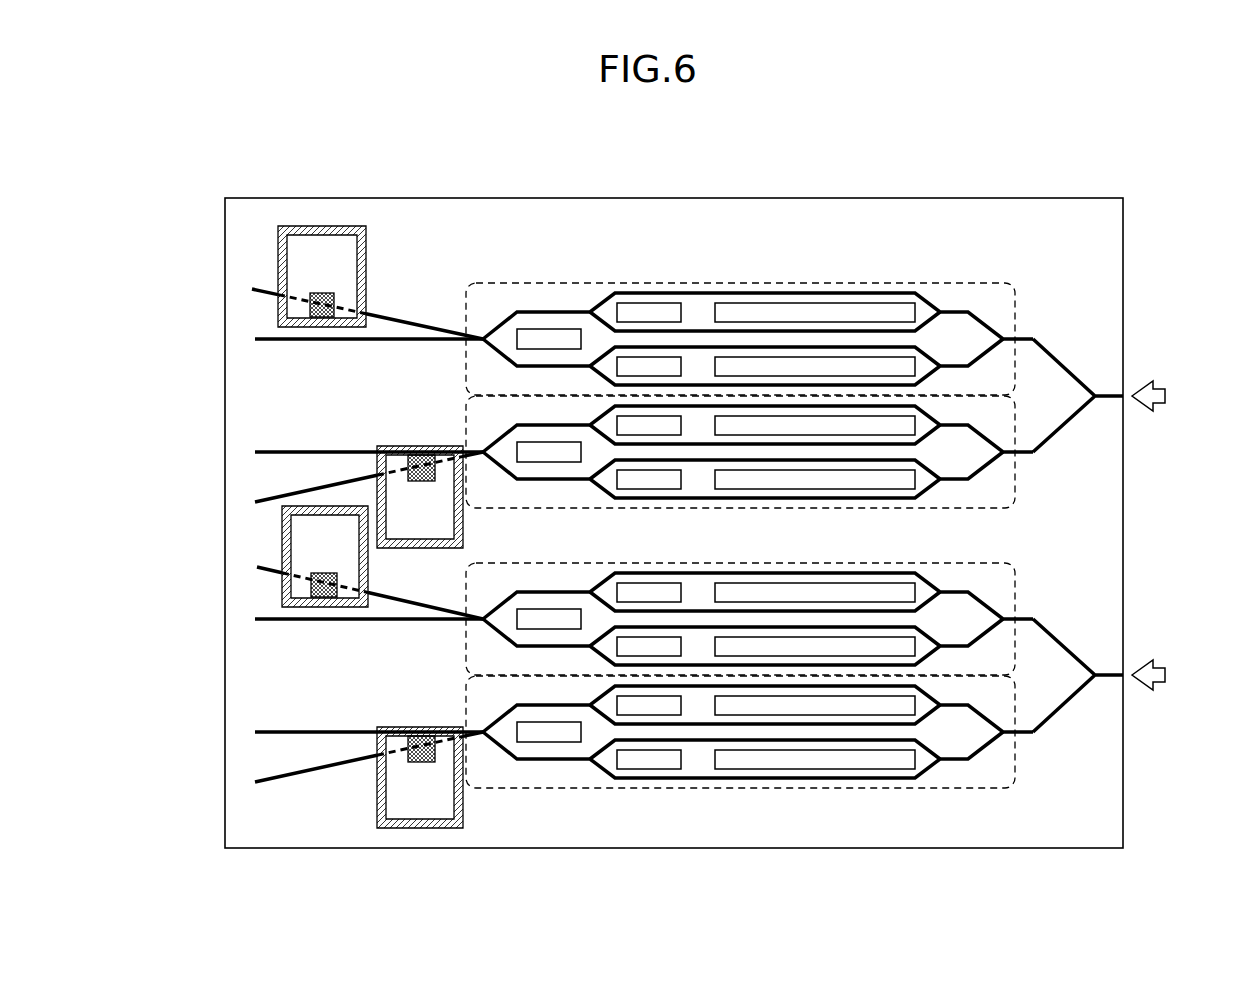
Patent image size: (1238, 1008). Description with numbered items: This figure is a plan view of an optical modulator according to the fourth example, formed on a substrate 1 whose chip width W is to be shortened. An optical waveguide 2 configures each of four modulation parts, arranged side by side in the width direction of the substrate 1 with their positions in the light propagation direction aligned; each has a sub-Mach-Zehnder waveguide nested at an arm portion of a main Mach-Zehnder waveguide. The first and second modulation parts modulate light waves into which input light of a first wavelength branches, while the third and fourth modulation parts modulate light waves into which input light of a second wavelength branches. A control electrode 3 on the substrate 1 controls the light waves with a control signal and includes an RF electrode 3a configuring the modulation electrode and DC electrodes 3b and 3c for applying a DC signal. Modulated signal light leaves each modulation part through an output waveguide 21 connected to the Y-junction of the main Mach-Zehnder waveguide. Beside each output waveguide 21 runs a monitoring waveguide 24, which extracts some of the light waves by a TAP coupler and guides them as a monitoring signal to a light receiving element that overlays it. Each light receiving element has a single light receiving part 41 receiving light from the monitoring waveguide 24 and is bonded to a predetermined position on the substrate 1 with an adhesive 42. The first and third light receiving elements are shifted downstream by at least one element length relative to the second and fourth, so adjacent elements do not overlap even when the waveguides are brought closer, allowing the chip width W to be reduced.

The substrate 1 is at (1095, 220).
The optical waveguide 2 is at (1094, 362).
The control electrode 3 is at (530, 155).
The RF electrode 3a is at (825, 298).
The DC electrode 3b is at (655, 298).
The DC electrode 3c is at (557, 298).
The output waveguide 21 is at (256, 340).
The monitoring waveguide 24 is at (257, 289).
The light receiving part 41 is at (320, 292).
The adhesive 42 is at (283, 226).
The chip width W is at (145, 198).